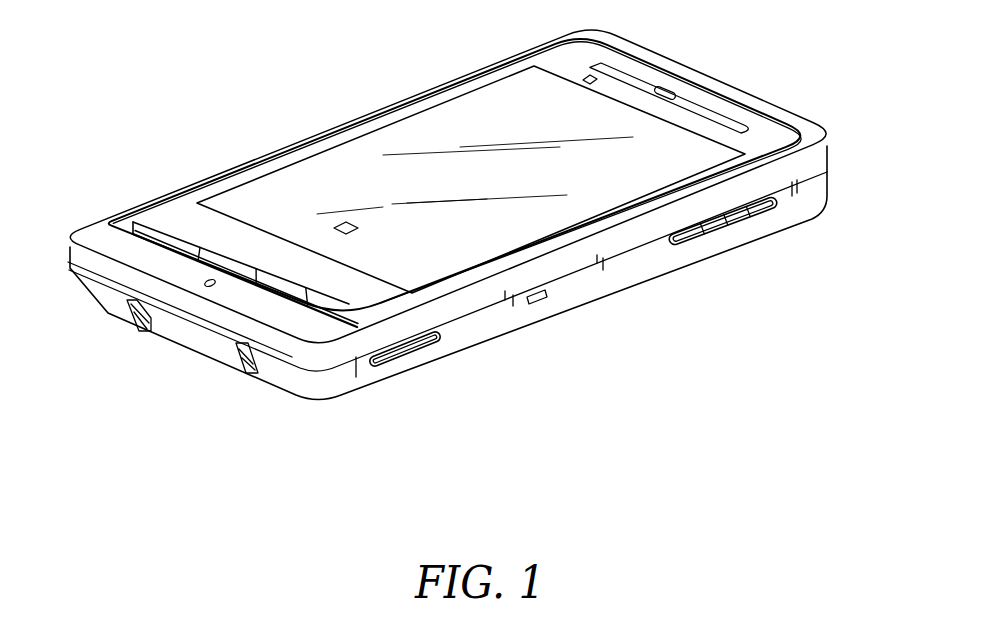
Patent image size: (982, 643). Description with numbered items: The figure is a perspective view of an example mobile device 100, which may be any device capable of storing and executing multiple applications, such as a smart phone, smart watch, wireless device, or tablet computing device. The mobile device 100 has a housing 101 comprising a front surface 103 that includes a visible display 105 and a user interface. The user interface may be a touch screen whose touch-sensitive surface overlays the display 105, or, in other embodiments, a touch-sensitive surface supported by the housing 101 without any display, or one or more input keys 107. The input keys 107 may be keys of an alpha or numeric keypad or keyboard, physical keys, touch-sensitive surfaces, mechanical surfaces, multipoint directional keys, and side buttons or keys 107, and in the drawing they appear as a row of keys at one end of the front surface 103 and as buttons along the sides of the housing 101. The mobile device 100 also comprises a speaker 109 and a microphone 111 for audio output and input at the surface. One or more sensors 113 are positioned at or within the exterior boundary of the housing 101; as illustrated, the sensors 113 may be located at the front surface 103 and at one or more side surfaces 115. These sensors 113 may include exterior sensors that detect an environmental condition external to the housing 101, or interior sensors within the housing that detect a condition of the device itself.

The mobile device 100 is at (812, 47).
The housing 101 is at (401, 106).
The front surface 103 is at (362, 290).
The display 105 is at (360, 160).
The input keys 107 is at (141, 217).
The speaker 109 is at (662, 91).
The microphone 111 is at (205, 285).
The sensors 113 is at (590, 74).
The side surfaces 115 is at (133, 308).